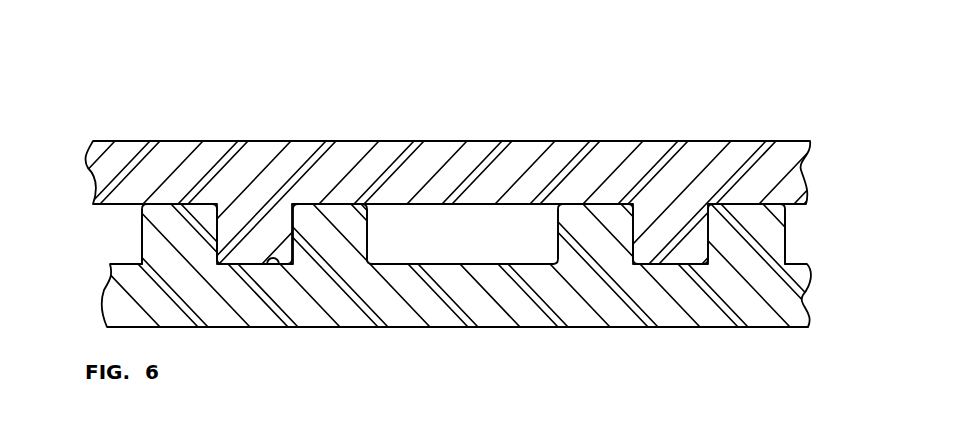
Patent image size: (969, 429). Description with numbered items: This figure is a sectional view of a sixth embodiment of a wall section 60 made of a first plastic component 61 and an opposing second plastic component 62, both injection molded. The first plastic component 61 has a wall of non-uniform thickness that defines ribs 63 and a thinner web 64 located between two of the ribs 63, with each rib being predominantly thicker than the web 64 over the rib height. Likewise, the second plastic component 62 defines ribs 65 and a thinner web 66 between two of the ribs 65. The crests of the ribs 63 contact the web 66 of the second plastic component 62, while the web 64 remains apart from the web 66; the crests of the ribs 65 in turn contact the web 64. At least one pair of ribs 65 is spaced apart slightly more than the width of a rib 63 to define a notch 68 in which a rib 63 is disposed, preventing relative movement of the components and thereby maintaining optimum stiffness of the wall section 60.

The wall section 60 is at (95, 136).
The first plastic component 61 is at (812, 160).
The second plastic component 62 is at (812, 292).
The ribs 63 is at (247, 266).
The web 64 is at (540, 205).
The ribs 65 is at (140, 249).
The web 66 is at (398, 265).
The notch 68 is at (279, 268).